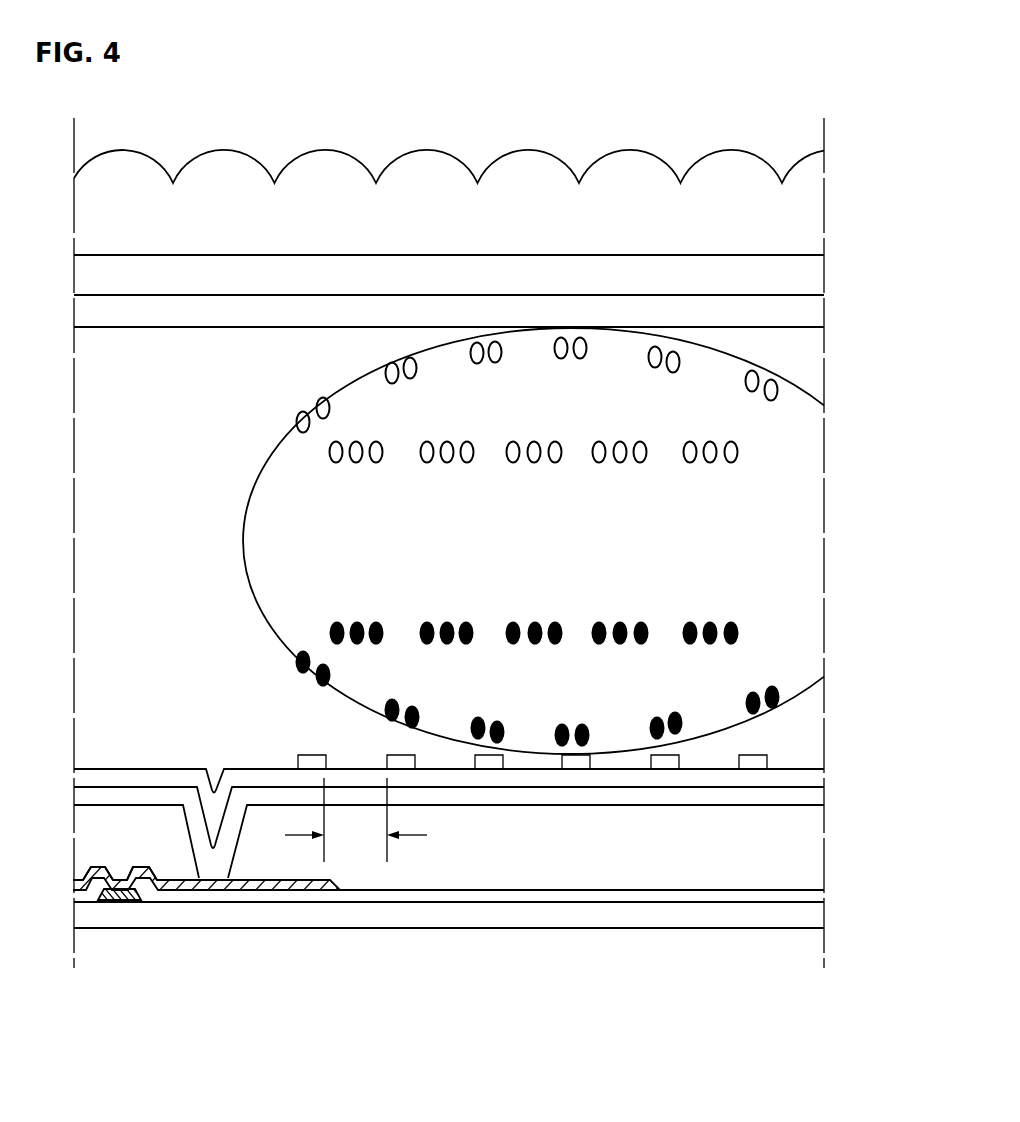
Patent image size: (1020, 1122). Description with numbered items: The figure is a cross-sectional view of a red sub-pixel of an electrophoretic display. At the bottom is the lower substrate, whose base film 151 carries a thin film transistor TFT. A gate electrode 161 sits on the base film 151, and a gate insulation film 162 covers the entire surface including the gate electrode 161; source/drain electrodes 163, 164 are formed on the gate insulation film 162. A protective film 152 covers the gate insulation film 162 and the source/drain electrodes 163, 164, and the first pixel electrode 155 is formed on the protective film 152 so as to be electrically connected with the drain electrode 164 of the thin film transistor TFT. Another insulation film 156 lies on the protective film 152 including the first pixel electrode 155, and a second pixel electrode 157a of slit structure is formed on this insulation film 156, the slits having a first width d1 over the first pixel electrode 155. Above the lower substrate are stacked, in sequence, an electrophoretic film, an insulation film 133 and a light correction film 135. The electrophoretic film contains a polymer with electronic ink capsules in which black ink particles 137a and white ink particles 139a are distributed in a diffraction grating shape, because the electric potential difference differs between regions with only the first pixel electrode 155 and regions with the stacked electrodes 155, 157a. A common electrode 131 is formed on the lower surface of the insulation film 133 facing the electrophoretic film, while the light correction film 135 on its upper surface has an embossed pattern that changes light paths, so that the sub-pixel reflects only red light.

The common electrode 131 is at (813, 313).
The insulation film 133 is at (813, 275).
The light correction film 135 is at (813, 213).
The black ink particles 137a is at (742, 632).
The white ink particles 139a is at (738, 452).
The base film 151 is at (482, 917).
The protective film 152 is at (815, 856).
The first pixel electrode 155 is at (815, 800).
The insulation film 156 is at (815, 777).
The second pixel electrode 157a is at (753, 761).
The gate electrode 161 is at (132, 939).
The gate insulation film 162 is at (258, 902).
The source electrode 163 is at (80, 887).
The drain electrode 164 is at (170, 884).
The thin film transistor TFT is at (211, 955).
The first width d1 is at (375, 820).